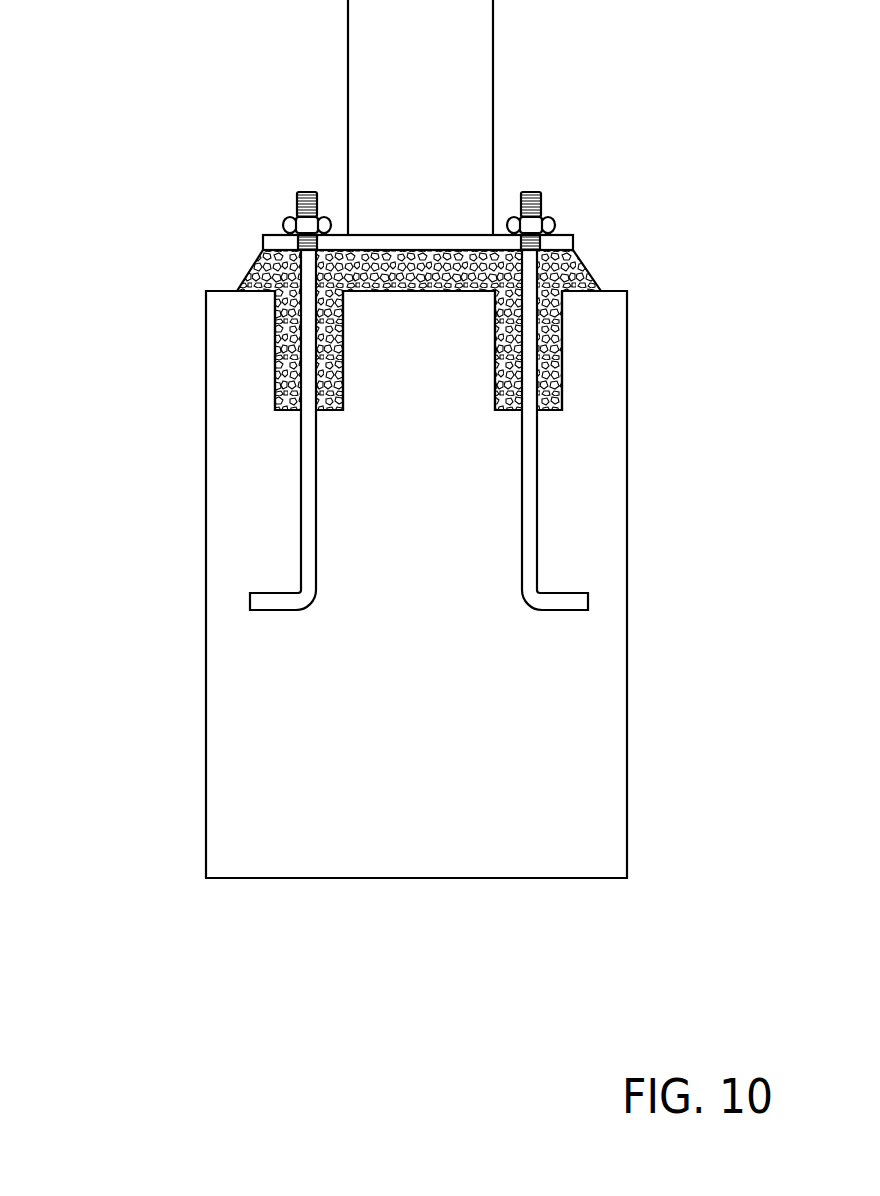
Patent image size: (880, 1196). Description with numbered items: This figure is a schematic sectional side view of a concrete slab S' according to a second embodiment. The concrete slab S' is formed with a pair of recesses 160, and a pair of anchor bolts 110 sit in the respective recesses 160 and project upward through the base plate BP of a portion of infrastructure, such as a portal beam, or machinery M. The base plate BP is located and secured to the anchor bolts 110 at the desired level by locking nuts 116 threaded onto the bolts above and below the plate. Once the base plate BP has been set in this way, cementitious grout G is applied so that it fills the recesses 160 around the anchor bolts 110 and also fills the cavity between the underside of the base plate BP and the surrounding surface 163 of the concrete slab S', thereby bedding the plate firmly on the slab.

The machinery M is at (472, 46).
The base plate BP is at (375, 231).
The anchor bolts 110 is at (545, 194).
The locking nuts 116 is at (561, 224).
The cementitious grout G is at (590, 266).
The surrounding surface 163 is at (213, 290).
The recesses 160 is at (271, 407).
The concrete slab S' is at (483, 584).